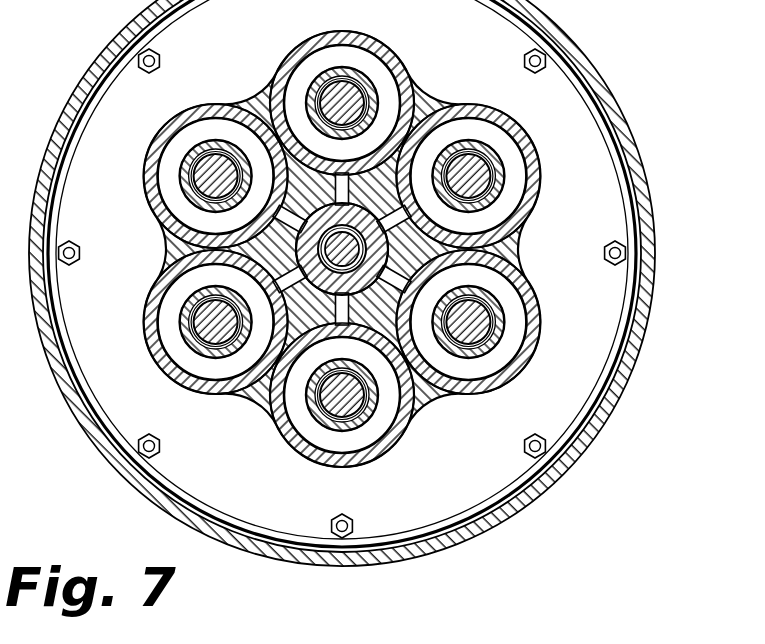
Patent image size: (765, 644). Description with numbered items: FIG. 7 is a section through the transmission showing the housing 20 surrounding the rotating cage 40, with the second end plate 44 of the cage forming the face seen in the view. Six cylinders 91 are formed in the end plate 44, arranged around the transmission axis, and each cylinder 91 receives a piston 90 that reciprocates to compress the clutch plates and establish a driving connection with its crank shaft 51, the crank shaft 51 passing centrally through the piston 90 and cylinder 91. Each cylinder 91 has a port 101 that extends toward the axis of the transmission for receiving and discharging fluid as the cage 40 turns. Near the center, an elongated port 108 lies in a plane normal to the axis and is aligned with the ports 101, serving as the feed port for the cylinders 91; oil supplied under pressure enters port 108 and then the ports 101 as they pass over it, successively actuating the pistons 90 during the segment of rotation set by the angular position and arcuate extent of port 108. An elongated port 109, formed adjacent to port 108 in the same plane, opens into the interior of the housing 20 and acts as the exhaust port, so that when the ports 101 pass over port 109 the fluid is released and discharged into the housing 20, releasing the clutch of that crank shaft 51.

The housing 20 is at (112, 36).
The cage 40 is at (342, 269).
The second end plate 44 is at (371, 273).
The crank shaft 51 is at (348, 96).
The piston 90 is at (376, 60).
The cylinder 91 is at (322, 34).
The port 101 is at (334, 172).
The elongated port 108 is at (243, 280).
The elongated port 109 is at (398, 213).